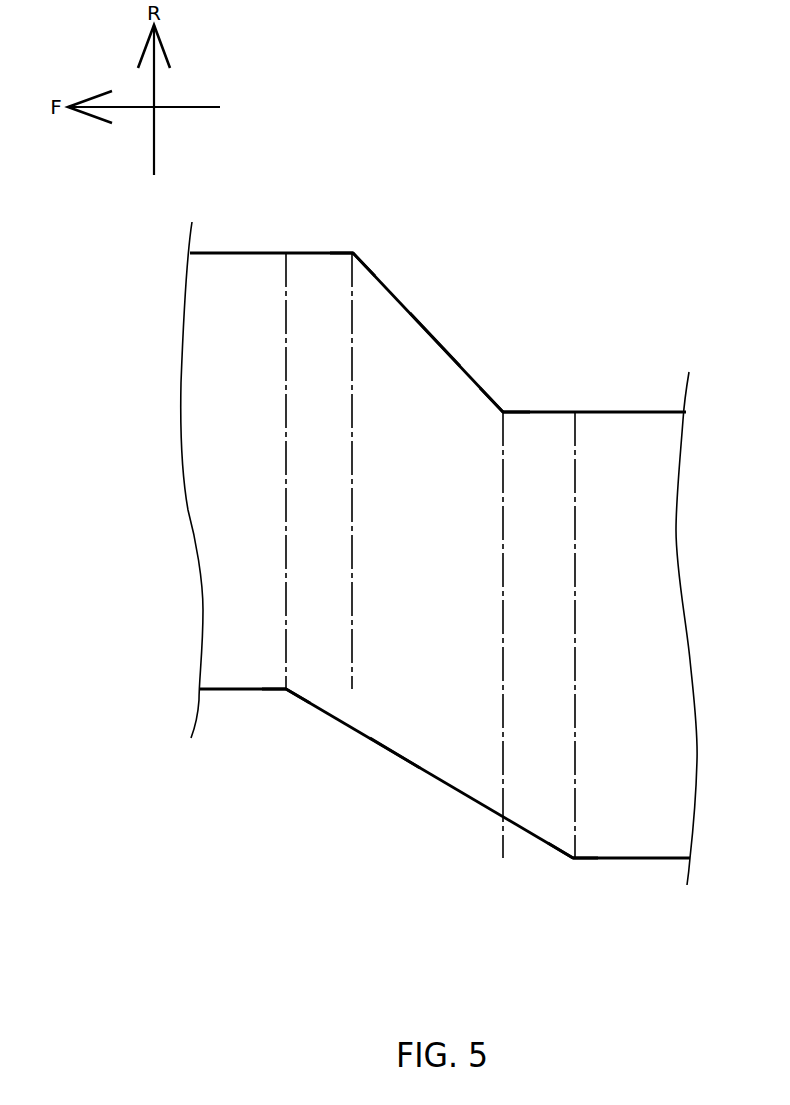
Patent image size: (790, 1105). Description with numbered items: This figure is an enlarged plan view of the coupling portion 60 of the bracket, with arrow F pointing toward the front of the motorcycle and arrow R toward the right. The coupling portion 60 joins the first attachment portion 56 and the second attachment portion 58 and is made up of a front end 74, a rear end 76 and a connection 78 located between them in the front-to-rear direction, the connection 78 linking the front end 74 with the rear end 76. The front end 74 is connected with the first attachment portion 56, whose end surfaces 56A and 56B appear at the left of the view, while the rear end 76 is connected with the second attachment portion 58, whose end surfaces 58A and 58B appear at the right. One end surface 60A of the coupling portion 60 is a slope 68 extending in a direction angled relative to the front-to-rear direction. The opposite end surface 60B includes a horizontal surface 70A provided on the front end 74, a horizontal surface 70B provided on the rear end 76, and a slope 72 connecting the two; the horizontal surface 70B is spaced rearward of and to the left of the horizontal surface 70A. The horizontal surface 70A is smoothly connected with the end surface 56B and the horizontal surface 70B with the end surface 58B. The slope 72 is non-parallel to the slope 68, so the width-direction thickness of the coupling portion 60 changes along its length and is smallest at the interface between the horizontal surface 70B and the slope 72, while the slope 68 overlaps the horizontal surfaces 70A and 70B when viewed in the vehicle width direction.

The first attachment portion 56 is at (267, 474).
The end surface of the first attachment portion 56A is at (264, 689).
The end surface of the first attachment portion 56B is at (238, 253).
The second attachment portion 58 is at (600, 638).
The end surface of the second attachment portion 58A is at (596, 858).
The end surface of the second attachment portion 58B is at (631, 412).
The coupling portion 60 is at (430, 549).
The end surface 60A is at (430, 804).
The slope 68 is at (429, 773).
The end surface 60B is at (431, 269).
The horizontal surface 70A is at (343, 253).
The horizontal surface 70B is at (532, 412).
The slope 72 is at (440, 345).
The front end 74 is at (316, 686).
The rear end 76 is at (515, 872).
The connection 78 is at (392, 751).